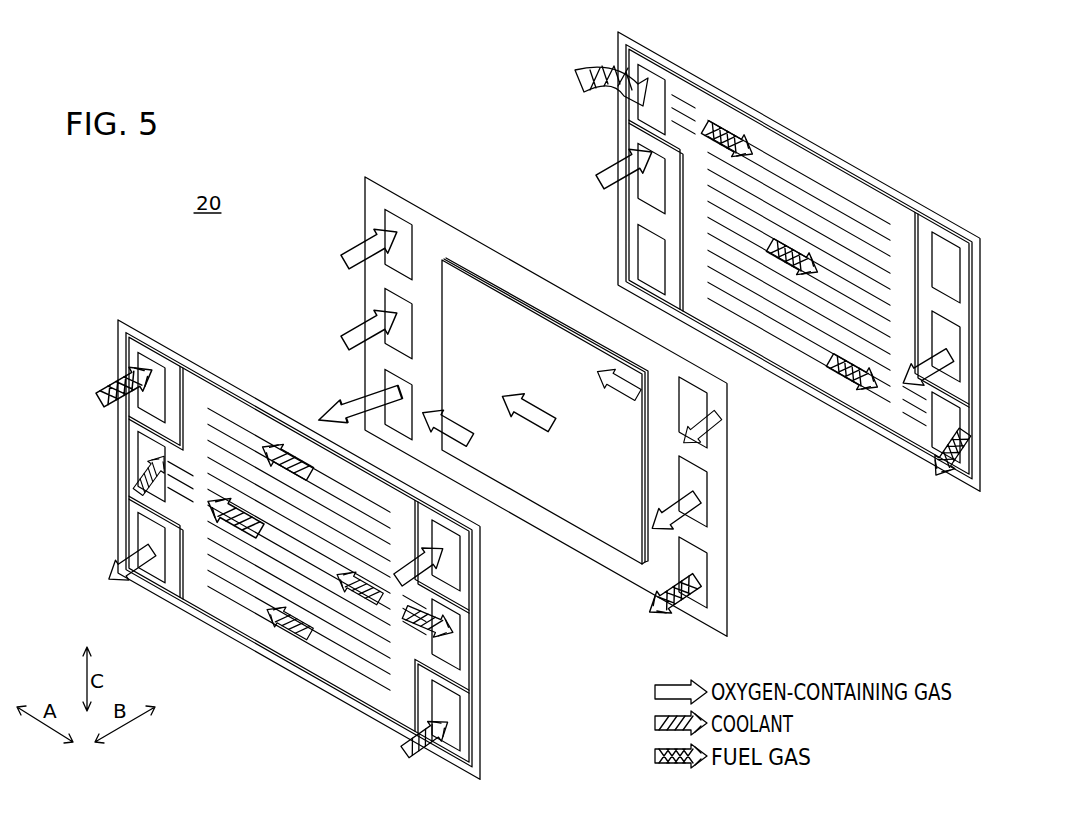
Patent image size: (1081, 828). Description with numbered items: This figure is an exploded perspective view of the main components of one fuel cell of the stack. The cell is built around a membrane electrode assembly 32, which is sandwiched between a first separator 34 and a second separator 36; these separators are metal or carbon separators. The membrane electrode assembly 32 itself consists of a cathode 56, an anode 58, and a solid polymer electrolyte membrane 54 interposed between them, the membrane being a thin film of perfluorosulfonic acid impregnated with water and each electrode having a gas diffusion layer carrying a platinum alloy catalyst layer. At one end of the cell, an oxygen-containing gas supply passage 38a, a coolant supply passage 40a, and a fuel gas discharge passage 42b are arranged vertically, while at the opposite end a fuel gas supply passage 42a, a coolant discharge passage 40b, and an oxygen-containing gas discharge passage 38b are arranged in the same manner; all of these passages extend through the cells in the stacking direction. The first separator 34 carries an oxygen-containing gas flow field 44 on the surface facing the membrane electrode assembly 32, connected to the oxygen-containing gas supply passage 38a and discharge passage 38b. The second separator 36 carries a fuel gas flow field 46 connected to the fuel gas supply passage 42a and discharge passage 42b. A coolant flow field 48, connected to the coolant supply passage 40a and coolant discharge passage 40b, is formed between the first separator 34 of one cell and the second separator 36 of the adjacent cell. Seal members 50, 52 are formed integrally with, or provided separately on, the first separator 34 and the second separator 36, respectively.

The membrane electrode assembly 32 is at (356, 190).
The first separator 34 is at (109, 331).
The second separator 36 is at (609, 49).
The oxygen-containing gas supply passage 38a is at (950, 284).
The oxygen-containing gas discharge passage 38b is at (645, 240).
The coolant supply passage 40a is at (950, 343).
The coolant discharge passage 40b is at (642, 158).
The fuel gas supply passage 42a is at (654, 82).
The fuel gas discharge passage 42b is at (950, 416).
The oxygen-containing gas flow field 44 is at (321, 623).
The fuel gas flow field 46 is at (823, 353).
The coolant flow field 48 is at (235, 593).
The seal member 50 is at (198, 375).
The seal member 52 is at (826, 160).
The solid polymer electrolyte membrane 54 is at (448, 242).
The cathode 56 is at (485, 290).
The anode 58 is at (515, 288).